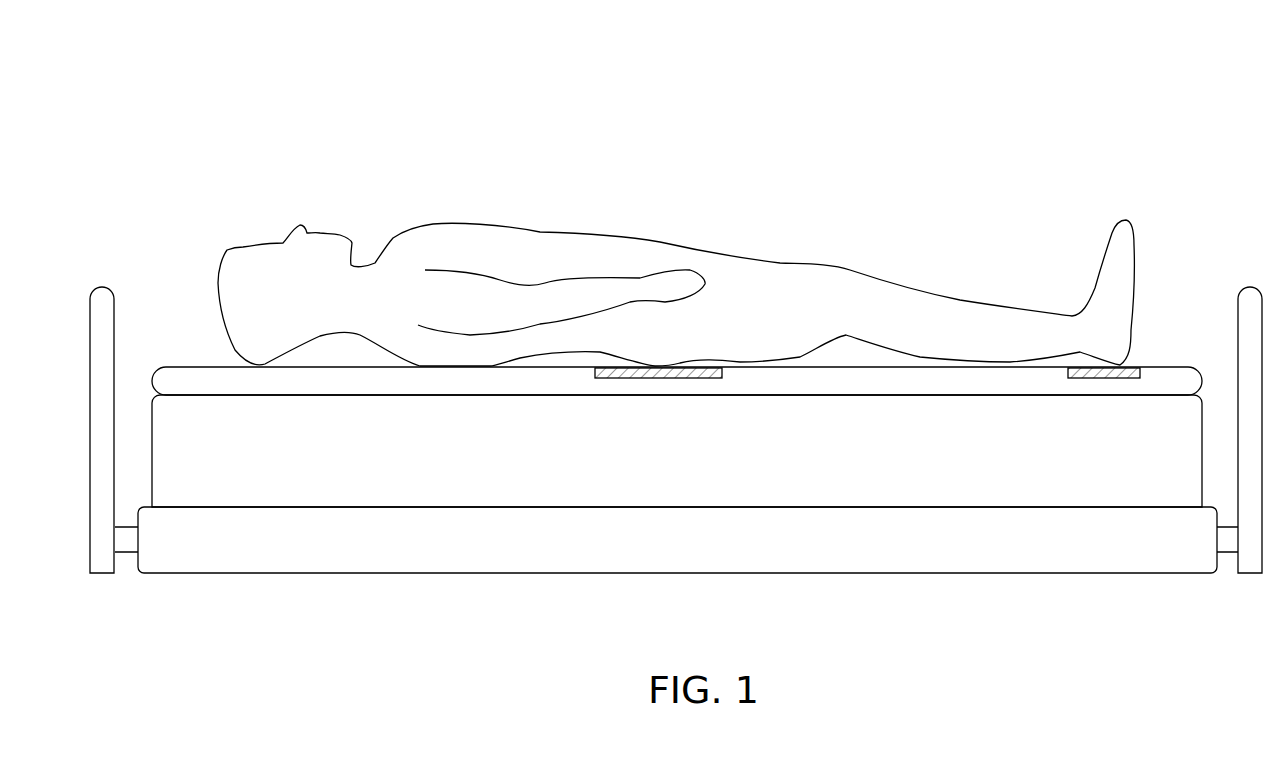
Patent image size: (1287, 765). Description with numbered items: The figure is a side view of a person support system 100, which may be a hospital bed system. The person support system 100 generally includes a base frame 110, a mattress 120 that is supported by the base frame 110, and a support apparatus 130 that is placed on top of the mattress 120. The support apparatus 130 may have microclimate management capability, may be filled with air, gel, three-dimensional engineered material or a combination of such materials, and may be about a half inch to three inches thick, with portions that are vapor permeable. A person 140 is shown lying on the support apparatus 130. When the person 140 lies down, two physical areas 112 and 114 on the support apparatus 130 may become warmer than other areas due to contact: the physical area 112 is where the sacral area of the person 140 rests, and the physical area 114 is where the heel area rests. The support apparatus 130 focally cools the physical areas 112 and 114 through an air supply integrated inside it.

The person support system 100 is at (1113, 113).
The base frame 110 is at (1142, 573).
The physical area 112 is at (687, 378).
The physical area 114 is at (1118, 378).
The mattress 120 is at (890, 508).
The support apparatus 130 is at (182, 366).
The person 140 is at (745, 255).